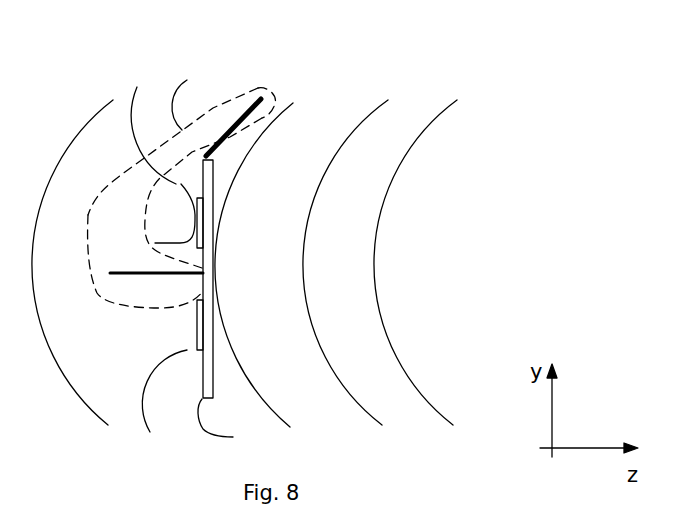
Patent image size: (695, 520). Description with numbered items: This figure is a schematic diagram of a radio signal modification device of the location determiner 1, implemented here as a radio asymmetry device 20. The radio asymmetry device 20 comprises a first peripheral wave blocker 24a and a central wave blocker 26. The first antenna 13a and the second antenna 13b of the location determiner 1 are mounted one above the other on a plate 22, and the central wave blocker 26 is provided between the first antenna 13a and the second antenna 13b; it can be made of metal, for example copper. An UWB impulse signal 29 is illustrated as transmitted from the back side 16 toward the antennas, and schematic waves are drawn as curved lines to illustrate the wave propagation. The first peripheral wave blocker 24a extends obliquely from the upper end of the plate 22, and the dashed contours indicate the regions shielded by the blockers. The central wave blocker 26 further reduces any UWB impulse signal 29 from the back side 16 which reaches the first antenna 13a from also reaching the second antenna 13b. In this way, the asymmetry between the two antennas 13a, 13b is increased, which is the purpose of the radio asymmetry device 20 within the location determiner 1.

The location determiner 1 is at (560, 114).
The first antenna 13a is at (155, 243).
The second antenna 13b is at (197, 330).
The back side 16 is at (625, 280).
The radio asymmetry device 20 is at (92, 178).
The carrier plate 22 is at (213, 377).
The first peripheral wave blocker 24a is at (226, 128).
The central wave blocker 26 is at (118, 277).
The UWB impulse signal 29 is at (428, 247).